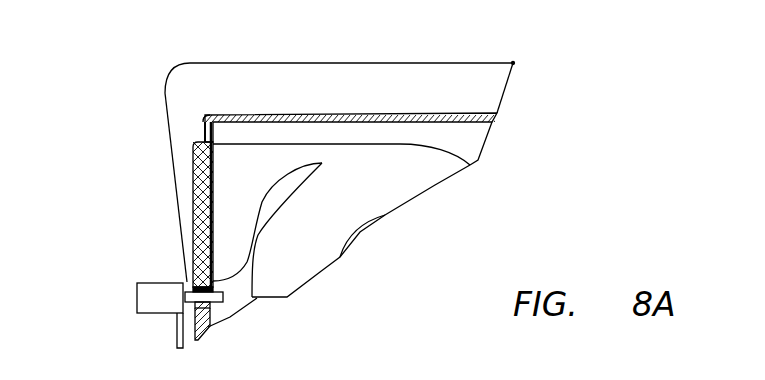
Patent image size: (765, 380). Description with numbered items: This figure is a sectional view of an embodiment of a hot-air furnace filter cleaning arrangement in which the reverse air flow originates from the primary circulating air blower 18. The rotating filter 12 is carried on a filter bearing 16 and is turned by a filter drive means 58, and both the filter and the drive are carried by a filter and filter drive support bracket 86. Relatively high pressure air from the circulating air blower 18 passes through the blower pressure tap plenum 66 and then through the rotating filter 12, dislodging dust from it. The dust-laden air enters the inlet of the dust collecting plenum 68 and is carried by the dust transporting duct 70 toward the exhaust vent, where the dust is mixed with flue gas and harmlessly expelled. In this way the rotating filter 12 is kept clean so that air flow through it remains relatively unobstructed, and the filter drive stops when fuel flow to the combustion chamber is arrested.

The rotating filter 12 is at (209, 325).
The filter bearing 16 is at (223, 296).
The circulating air blower 18 is at (368, 185).
The filter drive means 58 is at (158, 292).
The blower pressure tap plenum 66 is at (262, 177).
The dust collecting plenum 68 is at (187, 108).
The dust transporting duct 70 is at (387, 87).
The filter and filter drive support bracket 86 is at (180, 345).